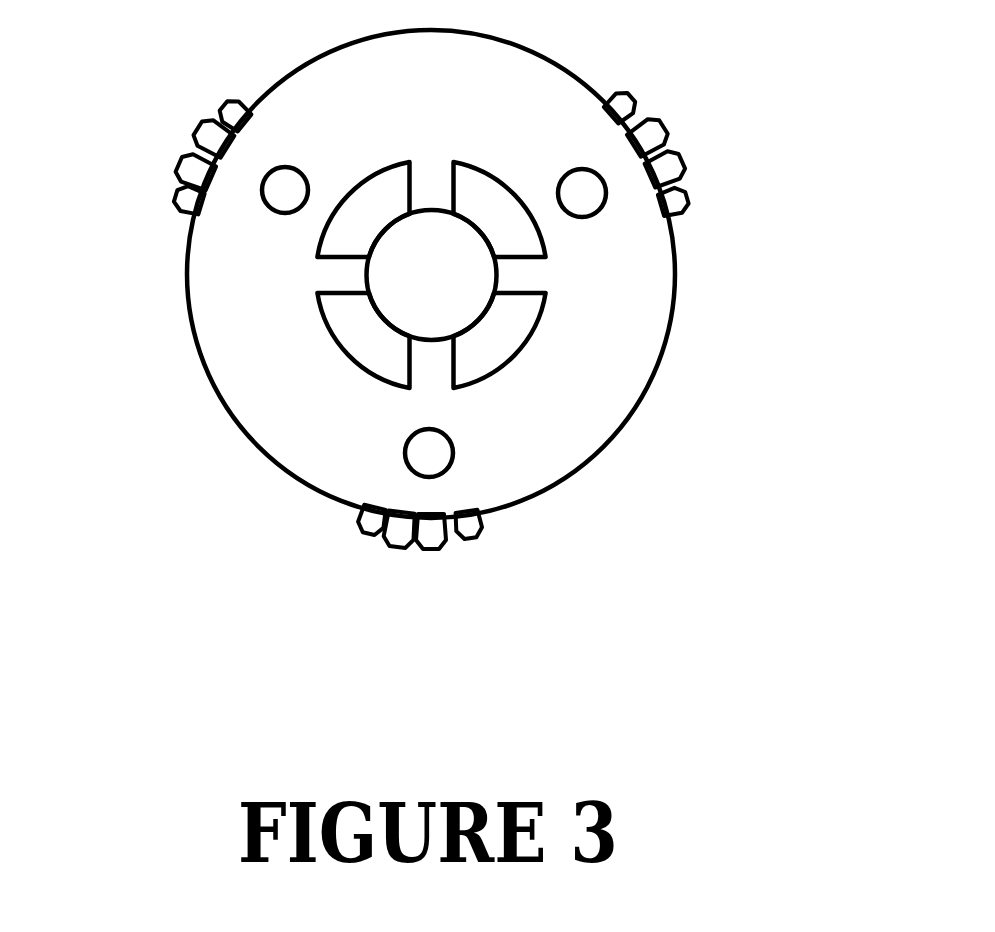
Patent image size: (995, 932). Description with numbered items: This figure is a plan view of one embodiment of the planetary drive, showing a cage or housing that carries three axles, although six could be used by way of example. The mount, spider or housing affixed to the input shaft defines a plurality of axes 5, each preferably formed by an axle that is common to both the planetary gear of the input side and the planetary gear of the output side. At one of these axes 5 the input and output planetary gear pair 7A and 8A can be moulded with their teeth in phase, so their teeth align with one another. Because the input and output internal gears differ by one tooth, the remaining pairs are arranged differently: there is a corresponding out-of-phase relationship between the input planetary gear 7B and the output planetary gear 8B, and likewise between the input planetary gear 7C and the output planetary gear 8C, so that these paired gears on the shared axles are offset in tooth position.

The axes 5 is at (288, 187).
The planetary gear of the input side 7A is at (663, 118).
The planetary gear of the output side 8A is at (663, 118).
The planetary gear of the input side 7B is at (437, 542).
The planetary gear of the output side 8B is at (380, 535).
The planetary gear of the input side 7C is at (187, 155).
The planetary gear of the output side 8C is at (178, 203).